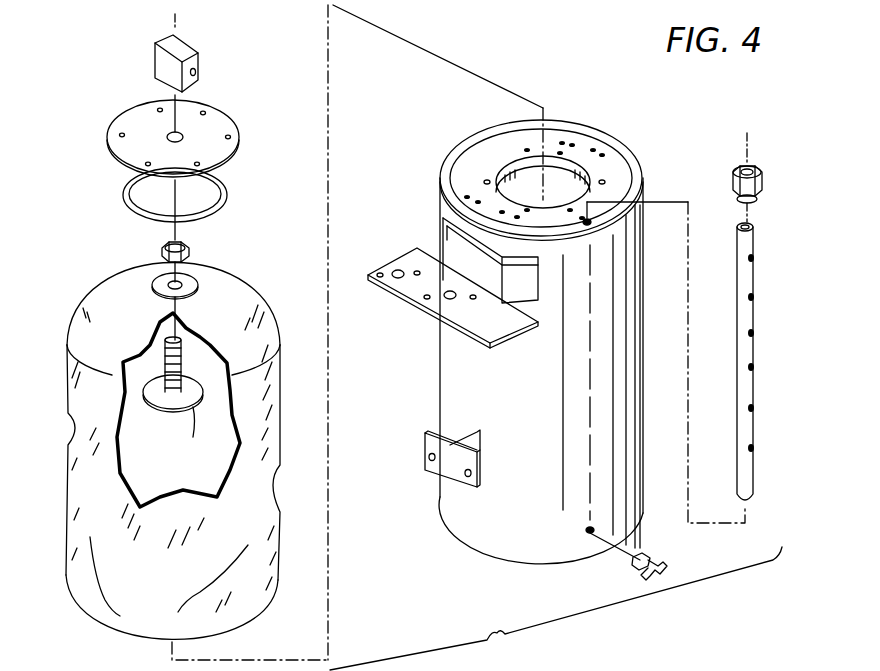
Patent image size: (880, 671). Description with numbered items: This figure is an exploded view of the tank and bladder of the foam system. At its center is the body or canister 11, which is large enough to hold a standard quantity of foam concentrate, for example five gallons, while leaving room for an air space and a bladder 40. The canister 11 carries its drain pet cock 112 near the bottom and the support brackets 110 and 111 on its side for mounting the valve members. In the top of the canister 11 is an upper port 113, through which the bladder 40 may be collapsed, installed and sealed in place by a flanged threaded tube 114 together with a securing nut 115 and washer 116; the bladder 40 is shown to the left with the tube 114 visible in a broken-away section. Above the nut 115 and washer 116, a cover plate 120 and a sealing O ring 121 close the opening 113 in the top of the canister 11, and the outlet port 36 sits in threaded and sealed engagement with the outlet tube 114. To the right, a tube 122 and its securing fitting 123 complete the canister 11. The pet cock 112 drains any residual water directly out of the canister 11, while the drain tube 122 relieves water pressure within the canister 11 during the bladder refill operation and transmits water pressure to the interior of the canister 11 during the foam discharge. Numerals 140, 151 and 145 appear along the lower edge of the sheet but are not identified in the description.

The outlet port 36 is at (155, 68).
The cover plate 120 is at (218, 122).
The sealing O ring 121 is at (125, 196).
The securing nut 115 is at (184, 245).
The washer 116 is at (152, 285).
The bladder 40 is at (70, 347).
The flanged threaded tube 114 is at (172, 420).
The canister 11 is at (445, 373).
The upper port 113 is at (480, 142).
The support bracket 110 is at (398, 268).
The support bracket 111 is at (425, 450).
The drain pet cock 112 is at (637, 572).
The drain tube 122 is at (752, 305).
The securing fitting 123 is at (762, 187).
The base 140 is at (582, 662).
The support 151 is at (656, 665).
The frame 145 is at (754, 659).